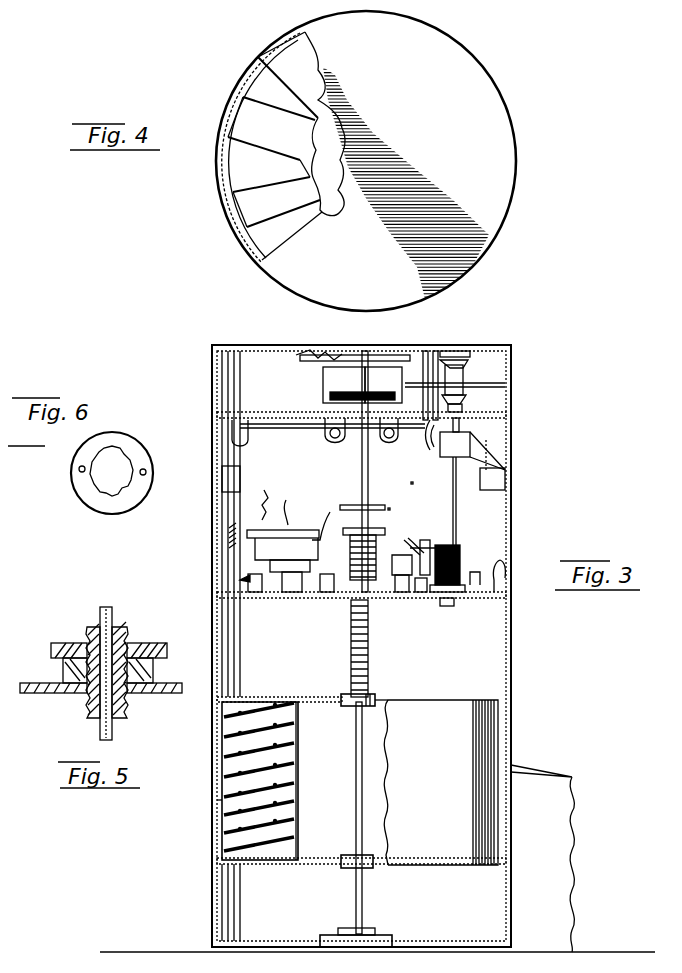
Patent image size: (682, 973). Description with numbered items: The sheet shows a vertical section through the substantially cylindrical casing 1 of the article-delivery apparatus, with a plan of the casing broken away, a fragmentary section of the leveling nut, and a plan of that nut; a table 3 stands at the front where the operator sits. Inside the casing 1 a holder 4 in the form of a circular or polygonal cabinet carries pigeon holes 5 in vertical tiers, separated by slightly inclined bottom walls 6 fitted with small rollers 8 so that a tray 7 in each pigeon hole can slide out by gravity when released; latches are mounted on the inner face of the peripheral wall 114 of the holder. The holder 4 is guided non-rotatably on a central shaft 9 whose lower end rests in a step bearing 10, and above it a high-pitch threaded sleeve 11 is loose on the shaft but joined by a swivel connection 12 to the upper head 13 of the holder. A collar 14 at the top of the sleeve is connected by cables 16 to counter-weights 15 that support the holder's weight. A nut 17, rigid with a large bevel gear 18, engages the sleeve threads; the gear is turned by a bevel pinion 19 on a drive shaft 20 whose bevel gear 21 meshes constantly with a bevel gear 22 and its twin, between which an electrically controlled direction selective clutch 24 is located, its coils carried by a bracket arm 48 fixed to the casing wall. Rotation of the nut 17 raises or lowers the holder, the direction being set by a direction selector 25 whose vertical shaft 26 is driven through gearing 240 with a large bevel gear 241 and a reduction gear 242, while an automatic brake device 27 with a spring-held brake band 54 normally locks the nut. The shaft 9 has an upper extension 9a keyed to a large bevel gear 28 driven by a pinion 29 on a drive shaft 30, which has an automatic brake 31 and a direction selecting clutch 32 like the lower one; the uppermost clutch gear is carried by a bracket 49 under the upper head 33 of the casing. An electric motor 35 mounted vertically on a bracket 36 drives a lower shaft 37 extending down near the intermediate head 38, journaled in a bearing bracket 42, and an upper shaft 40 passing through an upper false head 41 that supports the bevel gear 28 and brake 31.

In FIG. 4, the casing 1 is at (516, 165).
In FIG. 3, the casing 1 is at (513, 515).
In FIG. 3, the table 3 is at (572, 777).
In FIG. 4, the holder 4 is at (248, 150).
In FIG. 3, the holder 4 is at (455, 705).
In FIG. 4, the pigeon holes 5 is at (280, 58).
In FIG. 3, the pigeon holes 5 is at (216, 800).
In FIG. 3, the bottom walls 6 is at (298, 748).
In FIG. 3, the tray 7 is at (298, 730).
In FIG. 3, the rollers 8 is at (285, 718).
In FIG. 3, the central shaft 9 is at (356, 780).
In FIG. 5, the upper extension 9a is at (112, 612).
In FIG. 3, the upper extension 9a is at (362, 465).
In FIG. 3, the step bearing 10 is at (380, 932).
In FIG. 5, the threaded sleeve 11 is at (88, 706).
In FIG. 3, the threaded sleeve 11 is at (369, 672).
In FIG. 3, the swivel connection 12 is at (350, 706).
In FIG. 3, the upper head 13 is at (326, 697).
In FIG. 3, the collar 14 is at (345, 505).
In FIG. 4, the counter-weights 15 is at (328, 150).
In FIG. 3, the counter-weights 15 is at (241, 474).
In FIG. 3, the flexible cords or cables 16 is at (292, 428).
In FIG. 6, the nut 17 is at (138, 454).
In FIG. 5, the nut 17 is at (154, 672).
In FIG. 3, the nut 17 is at (312, 322).
In FIG. 5, the bevel gear 18 is at (152, 643).
In FIG. 3, the bevel gear 18 is at (350, 560).
In FIG. 3, the bevel pinion 19 is at (408, 556).
In FIG. 3, the drive shaft 20 is at (404, 598).
In FIG. 3, the bevel gear 21 is at (428, 542).
In FIG. 3, the bevel gear 22 is at (462, 556).
In FIG. 3, the direction selective clutch 24 is at (423, 598).
In FIG. 3, the direction selector 25 is at (476, 604).
In FIG. 3, the vertical shaft 26 is at (255, 552).
In FIG. 3, the automatic brake device 27 is at (412, 482).
In FIG. 3, the bevel gear 28 is at (359, 385).
In FIG. 3, the pinion 29 is at (383, 385).
In FIG. 3, the drive shaft 30 is at (425, 351).
In FIG. 3, the automatic brake 31 is at (430, 418).
In FIG. 3, the direction selecting clutch 32 is at (478, 378).
In FIG. 4, the upper head 33 is at (415, 181).
In FIG. 3, the upper head 33 is at (498, 351).
In FIG. 3, the electric motor 35 is at (440, 448).
In FIG. 3, the bracket 36 is at (508, 441).
In FIG. 3, the shaft 37 is at (457, 496).
In FIG. 5, the intermediate head 38 is at (50, 693).
In FIG. 3, the intermediate head 38 is at (290, 598).
In FIG. 3, the shaft 40 is at (463, 410).
In FIG. 3, the upper false head 41 is at (268, 412).
In FIG. 3, the bearing bracket 42 is at (448, 606).
In FIG. 3, the bracket arm 48 is at (503, 545).
In FIG. 3, the bracket 49 is at (460, 351).
In FIG. 3, the brake band 54 is at (352, 355).
In FIG. 3, the peripheral wall 114 is at (216, 742).
In FIG. 3, the gearing 240 is at (206, 585).
In FIG. 3, the bevel gear 241 is at (258, 598).
In FIG. 3, the reduction gear 242 is at (270, 568).